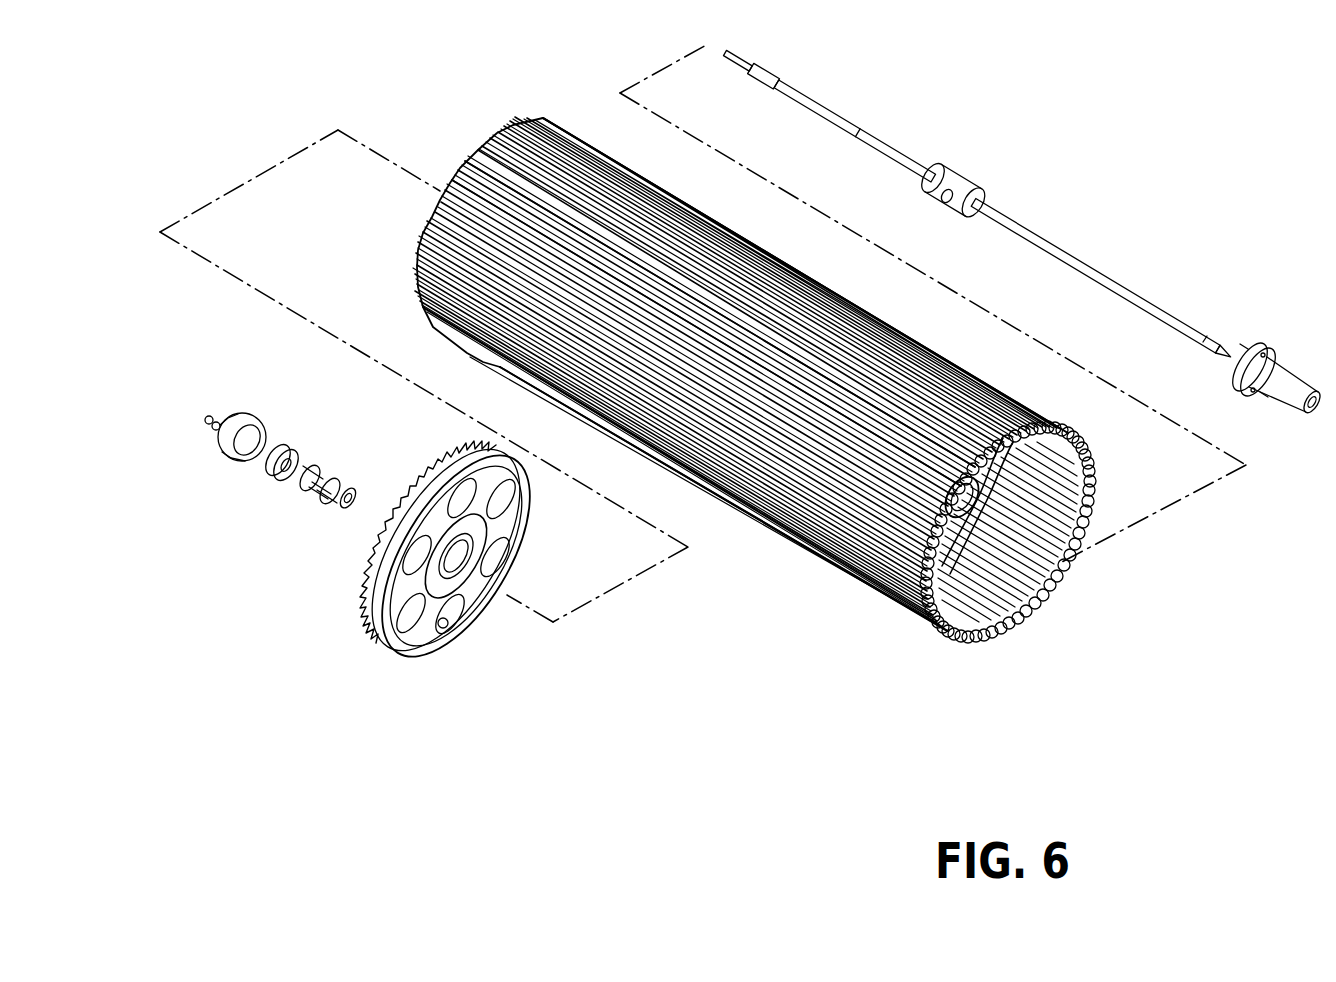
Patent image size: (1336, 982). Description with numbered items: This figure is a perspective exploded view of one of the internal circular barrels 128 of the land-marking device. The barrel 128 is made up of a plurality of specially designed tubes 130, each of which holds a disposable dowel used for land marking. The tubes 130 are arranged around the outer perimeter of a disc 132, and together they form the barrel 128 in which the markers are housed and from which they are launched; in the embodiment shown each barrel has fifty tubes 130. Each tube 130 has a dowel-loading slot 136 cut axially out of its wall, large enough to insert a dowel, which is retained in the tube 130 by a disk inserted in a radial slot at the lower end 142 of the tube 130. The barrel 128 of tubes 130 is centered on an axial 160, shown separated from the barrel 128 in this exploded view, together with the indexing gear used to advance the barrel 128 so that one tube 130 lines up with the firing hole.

The internal circular barrel 128 is at (865, 580).
The tube 130 is at (950, 626).
The disc 132 is at (1083, 511).
The dowel-loading slot 136 is at (870, 523).
The lower end 142 is at (1045, 417).
The axial 160 is at (833, 116).